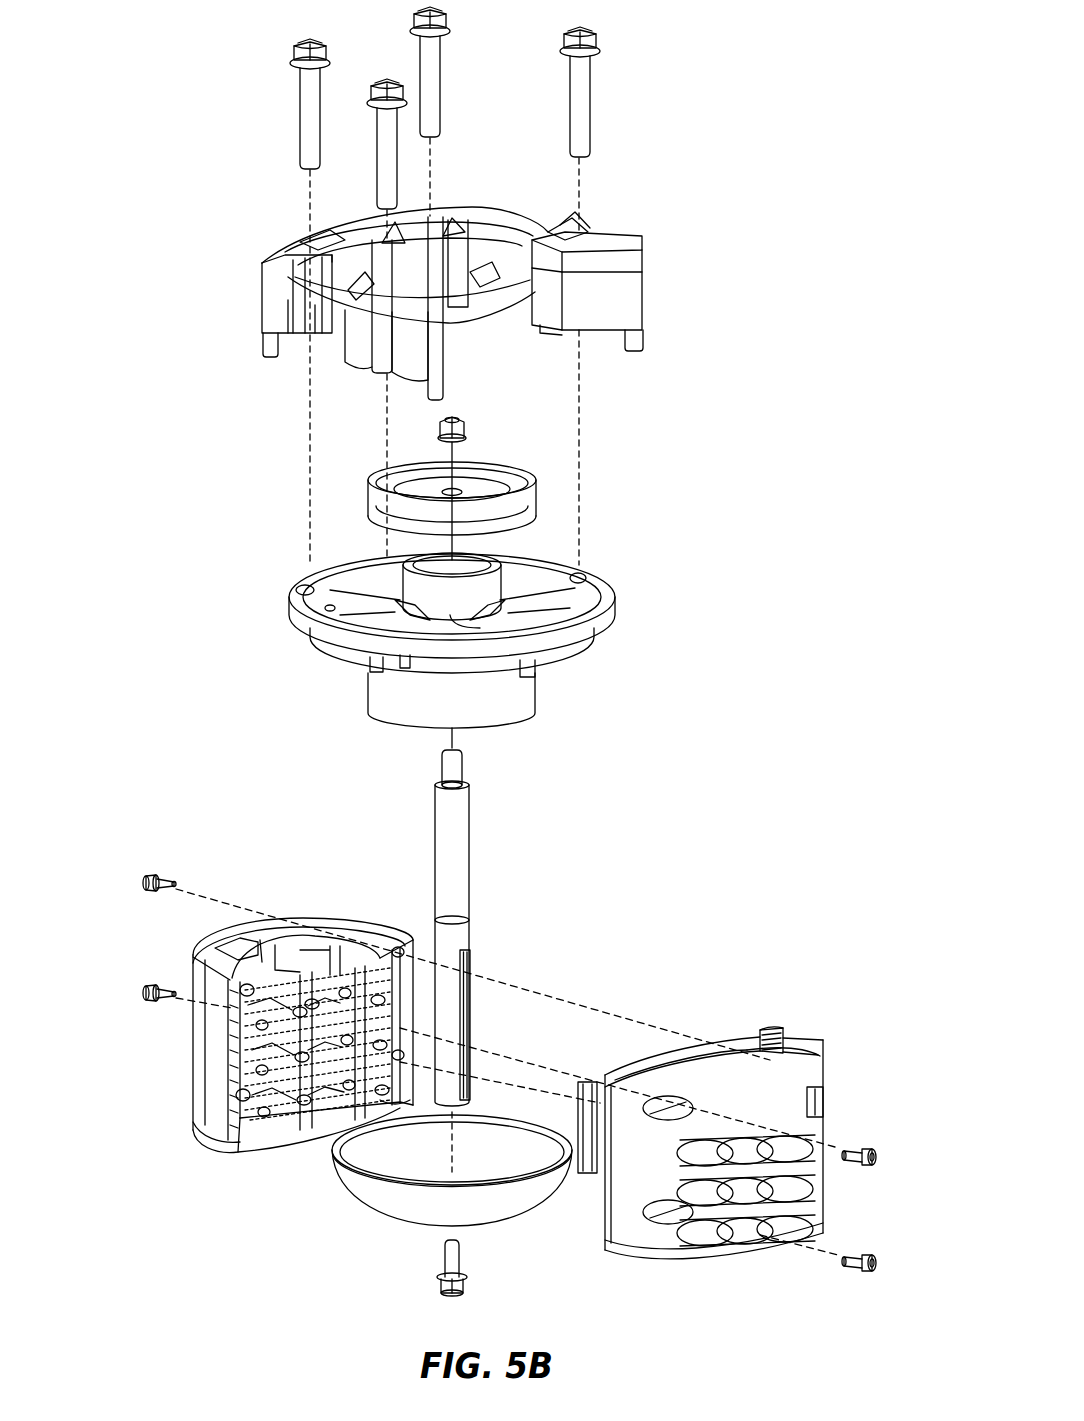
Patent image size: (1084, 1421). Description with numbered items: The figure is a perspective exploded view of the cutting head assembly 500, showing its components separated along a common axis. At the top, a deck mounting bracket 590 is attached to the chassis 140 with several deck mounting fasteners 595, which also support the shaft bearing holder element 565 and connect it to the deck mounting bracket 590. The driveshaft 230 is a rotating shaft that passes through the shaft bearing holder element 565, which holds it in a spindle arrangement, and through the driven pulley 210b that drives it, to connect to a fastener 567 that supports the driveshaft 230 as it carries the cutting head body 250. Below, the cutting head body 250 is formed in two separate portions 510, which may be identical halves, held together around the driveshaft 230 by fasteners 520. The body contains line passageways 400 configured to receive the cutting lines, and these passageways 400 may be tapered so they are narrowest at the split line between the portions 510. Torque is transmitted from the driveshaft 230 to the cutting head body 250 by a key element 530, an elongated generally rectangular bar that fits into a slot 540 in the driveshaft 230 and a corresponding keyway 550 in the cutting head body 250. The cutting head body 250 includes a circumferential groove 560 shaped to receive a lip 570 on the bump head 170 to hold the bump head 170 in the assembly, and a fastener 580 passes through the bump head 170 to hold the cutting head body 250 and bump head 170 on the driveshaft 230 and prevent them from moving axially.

The chassis 140 is at (258, 12).
The deck mounting fasteners 595 is at (590, 88).
The deck mounting bracket 590 is at (640, 347).
The fastener 567 is at (434, 431).
The driven pulley 210b is at (532, 522).
The shaft bearing holder element 565 is at (610, 627).
The driveshaft 230 is at (472, 890).
The slot 540 is at (476, 1018).
The cutting head assembly 500 is at (103, 833).
The portions 510 is at (218, 960).
The cutting head body 250 is at (225, 942).
The fasteners 520 is at (140, 884).
The line passageways 400 is at (383, 1093).
The keyway 550 is at (313, 1001).
The key element 530 is at (590, 1083).
The circumferential groove 560 is at (394, 1103).
The lip 570 is at (381, 1176).
The bump head 170 is at (337, 1150).
The fastener 580 is at (430, 1279).